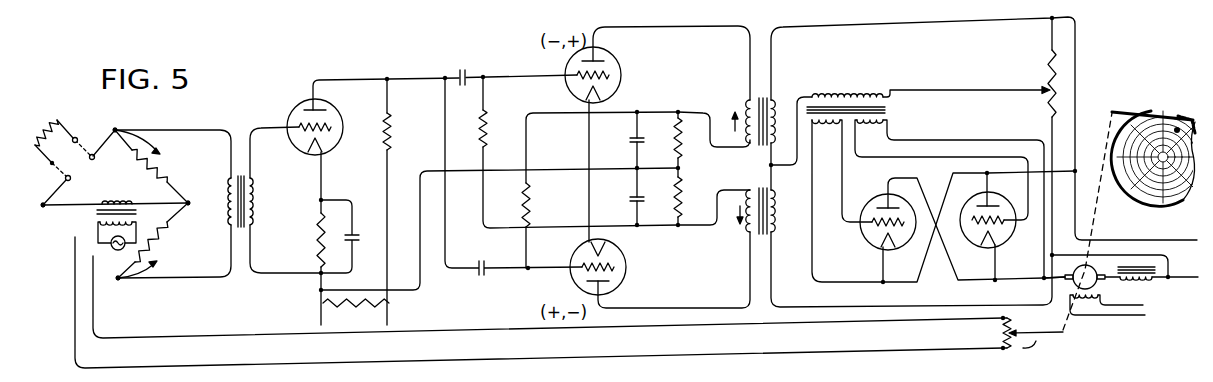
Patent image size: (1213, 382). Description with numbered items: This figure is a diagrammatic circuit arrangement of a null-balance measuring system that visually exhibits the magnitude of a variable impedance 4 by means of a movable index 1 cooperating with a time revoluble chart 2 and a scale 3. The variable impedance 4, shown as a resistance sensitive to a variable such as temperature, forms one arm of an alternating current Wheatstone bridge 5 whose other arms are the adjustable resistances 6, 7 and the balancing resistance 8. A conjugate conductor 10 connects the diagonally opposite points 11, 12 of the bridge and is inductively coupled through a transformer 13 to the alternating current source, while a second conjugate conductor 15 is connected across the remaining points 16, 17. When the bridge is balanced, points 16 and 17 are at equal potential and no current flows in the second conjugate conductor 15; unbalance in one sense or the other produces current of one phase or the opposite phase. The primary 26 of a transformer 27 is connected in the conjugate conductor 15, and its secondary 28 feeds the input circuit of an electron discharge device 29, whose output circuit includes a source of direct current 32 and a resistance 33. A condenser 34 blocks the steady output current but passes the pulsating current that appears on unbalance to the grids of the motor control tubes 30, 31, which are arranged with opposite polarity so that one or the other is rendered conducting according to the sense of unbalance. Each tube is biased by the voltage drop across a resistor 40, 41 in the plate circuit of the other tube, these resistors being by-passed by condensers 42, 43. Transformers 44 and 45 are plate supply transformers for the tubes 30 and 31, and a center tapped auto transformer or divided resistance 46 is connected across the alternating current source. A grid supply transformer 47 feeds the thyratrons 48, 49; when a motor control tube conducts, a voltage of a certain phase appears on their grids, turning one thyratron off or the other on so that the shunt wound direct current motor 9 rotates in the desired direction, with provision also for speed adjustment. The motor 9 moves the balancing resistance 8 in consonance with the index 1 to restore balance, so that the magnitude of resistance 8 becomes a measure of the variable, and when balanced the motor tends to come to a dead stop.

The movable index 1 is at (1121, 111).
The time revoluble chart 2 is at (1144, 205).
The scale 3 is at (1180, 122).
The variable impedance 4 is at (72, 158).
The alternating current Wheatstone bridge 5 is at (123, 186).
The adjustable resistance 6 is at (168, 176).
The adjustable resistance 7 is at (162, 236).
The balancing resistance 8 is at (1022, 333).
The motor 9 is at (1125, 299).
The conjugate conductor 10 is at (163, 202).
The bridge point 11 is at (43, 208).
The bridge point 12 is at (190, 207).
The transformer 13 is at (106, 225).
The second conjugate conductor 15 is at (202, 128).
The bridge point 16 is at (115, 130).
The bridge point 17 is at (118, 282).
The primary 26 is at (216, 201).
The transformer 27 is at (249, 231).
The secondary 28 is at (265, 201).
The electron discharge device 29 is at (333, 105).
The motor control tube 30 is at (613, 57).
The motor control tube 31 is at (619, 255).
The source of direct current 32 is at (358, 316).
The resistance 33 is at (399, 131).
The condenser 34 is at (463, 66).
The resistor 40 is at (690, 138).
The resistor 41 is at (690, 197).
The condenser 42 is at (648, 141).
The condenser 43 is at (648, 198).
The plate supply transformer 44 is at (750, 98).
The plate supply transformer 45 is at (758, 234).
The center tapped auto transformer or divided resistance 46 is at (1047, 76).
The grid supply transformer 47 is at (861, 109).
The thyratron 48 is at (872, 249).
The thyratron 49 is at (1003, 248).